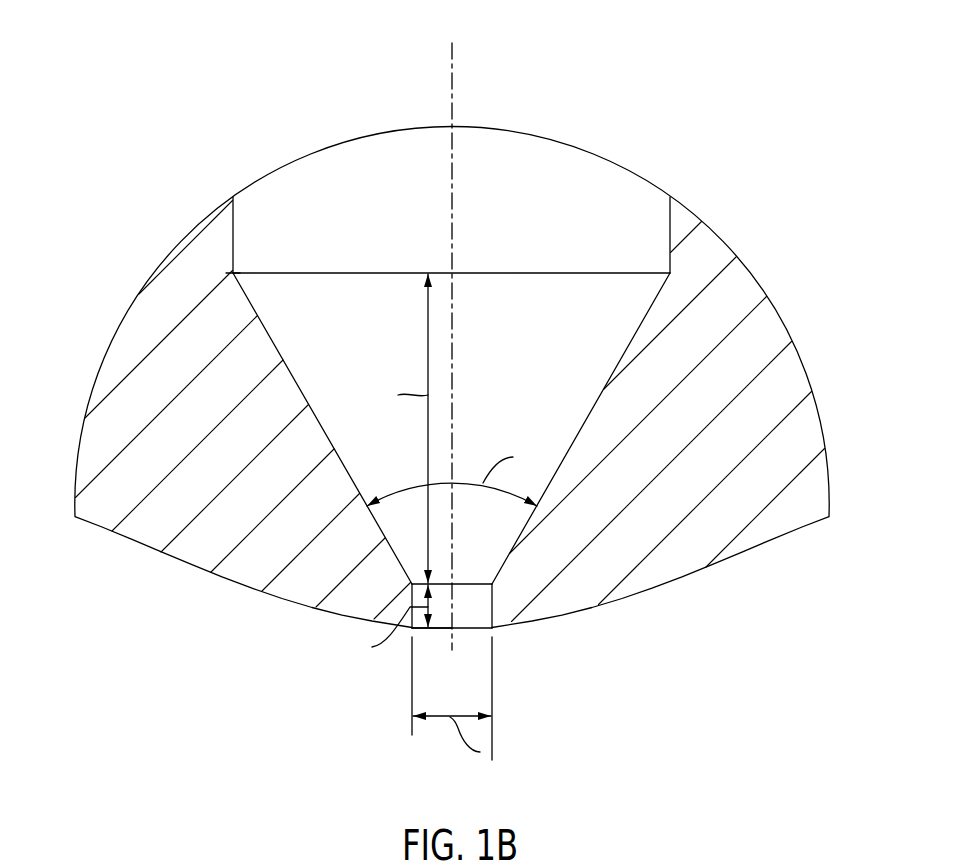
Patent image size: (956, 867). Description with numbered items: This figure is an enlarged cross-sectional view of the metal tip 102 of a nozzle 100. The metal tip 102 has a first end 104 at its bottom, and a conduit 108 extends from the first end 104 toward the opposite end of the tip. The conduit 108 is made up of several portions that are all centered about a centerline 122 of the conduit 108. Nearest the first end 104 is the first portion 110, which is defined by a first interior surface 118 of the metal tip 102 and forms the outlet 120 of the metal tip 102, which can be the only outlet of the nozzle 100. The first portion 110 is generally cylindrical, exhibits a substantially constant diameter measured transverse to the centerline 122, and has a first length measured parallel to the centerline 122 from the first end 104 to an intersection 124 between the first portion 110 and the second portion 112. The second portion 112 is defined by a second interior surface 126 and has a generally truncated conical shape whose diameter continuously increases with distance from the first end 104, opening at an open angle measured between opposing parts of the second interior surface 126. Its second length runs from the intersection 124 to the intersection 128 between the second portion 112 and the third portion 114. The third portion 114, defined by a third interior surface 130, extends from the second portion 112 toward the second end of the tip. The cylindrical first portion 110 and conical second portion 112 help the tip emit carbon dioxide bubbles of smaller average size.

The nozzle 100 is at (741, 100).
The metal tip 102 is at (473, 389).
The first end 104 is at (295, 605).
The conduit 108 is at (519, 183).
The first portion 110 is at (526, 666).
The second portion 112 is at (566, 471).
The third portion 114 is at (676, 228).
The first interior surface 118 is at (473, 630).
The outlet 120 is at (443, 632).
The centerline 122 is at (452, 62).
The intersection 124 is at (495, 584).
The second interior surface 126 is at (330, 437).
The intersection 128 is at (230, 274).
The third interior surface 130 is at (237, 222).